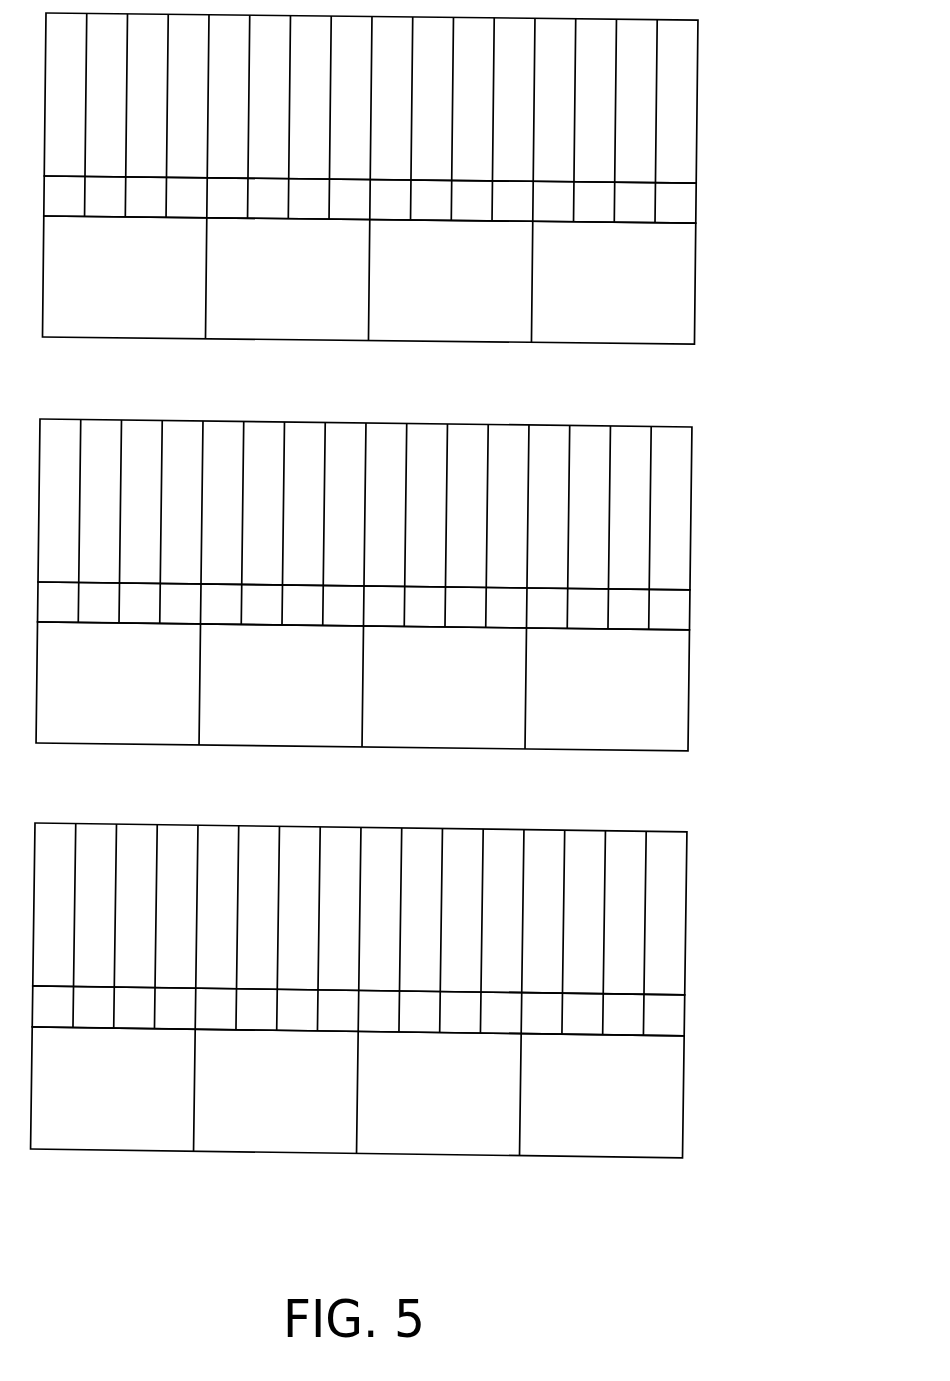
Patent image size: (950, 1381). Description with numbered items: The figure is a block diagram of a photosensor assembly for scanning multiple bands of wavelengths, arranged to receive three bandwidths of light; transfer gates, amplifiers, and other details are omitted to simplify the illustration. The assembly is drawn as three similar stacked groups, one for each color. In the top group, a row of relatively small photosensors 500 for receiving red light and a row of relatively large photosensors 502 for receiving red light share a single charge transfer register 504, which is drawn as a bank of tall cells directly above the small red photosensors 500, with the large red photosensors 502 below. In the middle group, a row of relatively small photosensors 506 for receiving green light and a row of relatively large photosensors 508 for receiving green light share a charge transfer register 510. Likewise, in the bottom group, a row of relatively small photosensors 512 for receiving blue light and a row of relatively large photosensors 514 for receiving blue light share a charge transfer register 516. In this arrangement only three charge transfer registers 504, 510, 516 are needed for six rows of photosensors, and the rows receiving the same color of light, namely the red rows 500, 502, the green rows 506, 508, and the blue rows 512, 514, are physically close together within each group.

The row of relatively small photosensors for receiving red light 500 is at (697, 198).
The row of relatively large photosensors for receiving red light 502 is at (694, 280).
The charge transfer register 504 is at (697, 101).
The row of relatively small photosensors for receiving green light 506 is at (690, 606).
The row of relatively large photosensors for receiving green light 508 is at (688, 685).
The charge transfer register 510 is at (692, 505).
The row of relatively small photosensors for receiving blue light 512 is at (685, 1011).
The row of relatively large photosensors for receiving blue light 514 is at (683, 1095).
The charge transfer register 516 is at (687, 910).